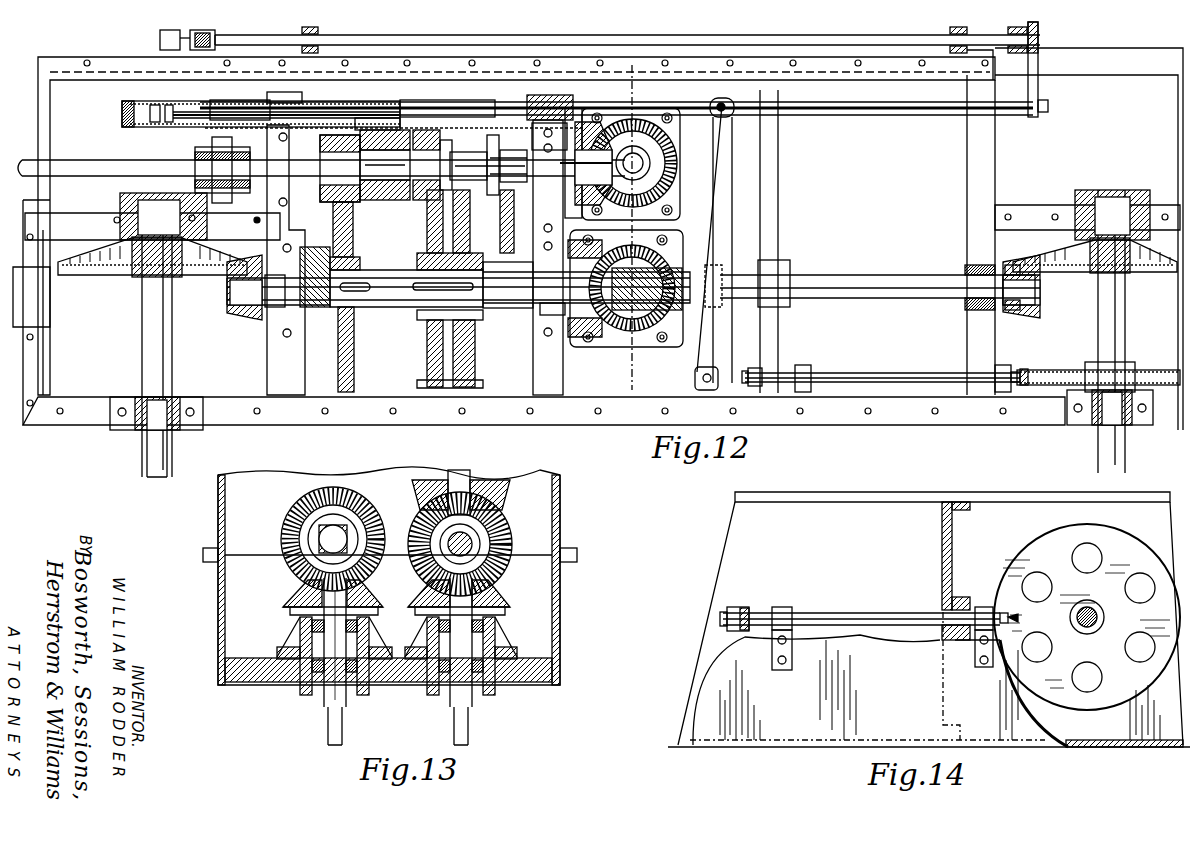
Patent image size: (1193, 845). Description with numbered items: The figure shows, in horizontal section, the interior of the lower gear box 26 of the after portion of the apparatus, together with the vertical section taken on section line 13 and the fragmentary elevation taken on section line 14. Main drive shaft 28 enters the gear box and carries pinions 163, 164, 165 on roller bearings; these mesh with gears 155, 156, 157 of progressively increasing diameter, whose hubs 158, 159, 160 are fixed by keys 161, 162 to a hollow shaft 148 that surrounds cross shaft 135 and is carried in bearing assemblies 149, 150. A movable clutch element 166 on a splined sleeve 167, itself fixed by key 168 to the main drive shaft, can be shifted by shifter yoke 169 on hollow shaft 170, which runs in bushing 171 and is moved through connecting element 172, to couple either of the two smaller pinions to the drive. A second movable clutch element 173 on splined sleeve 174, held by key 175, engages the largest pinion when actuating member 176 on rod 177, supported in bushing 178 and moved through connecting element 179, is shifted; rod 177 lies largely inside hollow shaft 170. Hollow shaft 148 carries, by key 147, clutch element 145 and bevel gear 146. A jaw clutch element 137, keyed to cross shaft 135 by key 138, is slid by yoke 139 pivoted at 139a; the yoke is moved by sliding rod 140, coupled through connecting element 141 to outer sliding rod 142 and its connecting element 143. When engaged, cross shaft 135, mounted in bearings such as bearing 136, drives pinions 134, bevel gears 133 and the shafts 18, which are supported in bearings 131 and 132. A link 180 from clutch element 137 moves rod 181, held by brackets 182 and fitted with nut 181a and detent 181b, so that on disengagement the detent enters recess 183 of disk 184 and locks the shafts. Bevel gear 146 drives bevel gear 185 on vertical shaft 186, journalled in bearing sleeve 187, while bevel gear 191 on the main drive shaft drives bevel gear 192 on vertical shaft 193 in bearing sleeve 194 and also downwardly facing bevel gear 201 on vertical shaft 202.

In FIG. 12, the section line 13— 13 is at (636, 85).
In FIG. 12, the section line 14— 14 is at (850, 398).
In FIG. 12, the shafts 18 is at (145, 335).
In FIG. 14, the shafts 18 is at (1078, 630).
In FIG. 12, the lower gear box 26 is at (42, 56).
In FIG. 13, the lower gear box 26 is at (215, 515).
In FIG. 14, the lower gear box 26 is at (1013, 752).
In FIG. 12, the main drive shaft 28 is at (94, 168).
In FIG. 13, the main drive shaft 28 is at (472, 550).
In FIG. 12, the bearings 131 is at (138, 432).
In FIG. 12, the bearings 132 is at (138, 193).
In FIG. 12, the bevel gear 133 is at (116, 272).
In FIG. 12, the pinions 134 is at (235, 310).
In FIG. 12, the cross shaft 135 is at (320, 310).
In FIG. 12, the bearing 136 is at (958, 306).
In FIG. 12, the slideable clutch element 137 is at (708, 270).
In FIG. 12, the key 138 is at (708, 278).
In FIG. 12, the yoke 139 is at (718, 248).
In FIG. 12, the pivot 139a is at (700, 388).
In FIG. 12, the sliding rod 140 is at (892, 116).
In FIG. 12, the connecting element 141 is at (1040, 90).
In FIG. 12, the second sliding rod 142 is at (265, 44).
In FIG. 12, the connecting element 143 is at (186, 33).
In FIG. 13, the cooperating clutch element 145 is at (292, 540).
In FIG. 12, the bevel gear 146 is at (565, 244).
In FIG. 13, the bevel gear 146 is at (300, 514).
In FIG. 12, the key 147 is at (608, 290).
In FIG. 12, the hollow shaft 148 is at (312, 270).
In FIG. 13, the hollow shaft 148 is at (290, 568).
In FIG. 12, the bearing assembly 149 is at (525, 328).
In FIG. 12, the bearing assembly 150 is at (265, 308).
In FIG. 12, the gear 155 is at (353, 235).
In FIG. 12, the gear 156 is at (428, 232).
In FIG. 12, the gear 157 is at (505, 235).
In FIG. 12, the hub 158 is at (358, 262).
In FIG. 12, the hub 159 is at (418, 258).
In FIG. 12, the hub 160 is at (496, 262).
In FIG. 12, the key 161 is at (370, 286).
In FIG. 12, the key 162 is at (438, 283).
In FIG. 12, the pinion 163 is at (348, 120).
In FIG. 12, the pinion 164 is at (424, 186).
In FIG. 12, the pinion 165 is at (470, 220).
In FIG. 12, the movable clutch element 166 is at (420, 128).
In FIG. 12, the sleeve 167 is at (377, 116).
In FIG. 12, the key 168 is at (365, 166).
In FIG. 12, the shifter yoke 169 is at (380, 128).
In FIG. 12, the hollow shaft 170 is at (228, 110).
In FIG. 12, the bushing 171 is at (284, 93).
In FIG. 12, the connecting element 172 is at (152, 106).
In FIG. 12, the second movable clutch element 173 is at (511, 120).
In FIG. 12, the splined sleeve 174 is at (549, 126).
In FIG. 12, the key 175 is at (498, 166).
In FIG. 12, the actuating member 176 is at (549, 99).
In FIG. 12, the rod 177 is at (445, 112).
In FIG. 12, the bushing 178 is at (578, 108).
In FIG. 12, the connecting element 179 is at (190, 100).
In FIG. 12, the link 180 is at (780, 330).
In FIG. 14, the link 180 is at (760, 610).
In FIG. 12, the rod 181 is at (906, 372).
In FIG. 14, the rod 181 is at (898, 612).
In FIG. 12, the nut 181a is at (741, 362).
In FIG. 14, the nut 181a is at (742, 606).
In FIG. 12, the detent 181b is at (1020, 370).
In FIG. 14, the detent 181b is at (1012, 617).
In FIG. 12, the brackets 182 is at (810, 368).
In FIG. 14, the brackets 182 is at (788, 606).
In FIG. 12, the recess 183 is at (1020, 382).
In FIG. 14, the recess 183 is at (1003, 622).
In FIG. 12, the disk 184 is at (1072, 370).
In FIG. 14, the disk 184 is at (1042, 548).
In FIG. 12, the bevel gear 185 is at (640, 345).
In FIG. 13, the bevel gear 185 is at (300, 592).
In FIG. 12, the vertical shaft 186 is at (712, 214).
In FIG. 13, the vertical shaft 186 is at (325, 715).
In FIG. 13, the bearing sleeve 187 is at (300, 672).
In FIG. 12, the bevel gear 191 is at (592, 122).
In FIG. 13, the bevel gear 191 is at (498, 555).
In FIG. 12, the bevel gear 192 is at (614, 126).
In FIG. 13, the bevel gear 192 is at (495, 600).
In FIG. 12, the vertical shaft 193 is at (675, 165).
In FIG. 13, the vertical shaft 193 is at (478, 718).
In FIG. 13, the bearing sleeve 194 is at (428, 670).
In FIG. 13, the bevel gear 201 is at (500, 492).
In FIG. 13, the vertical shaft 202 is at (476, 490).